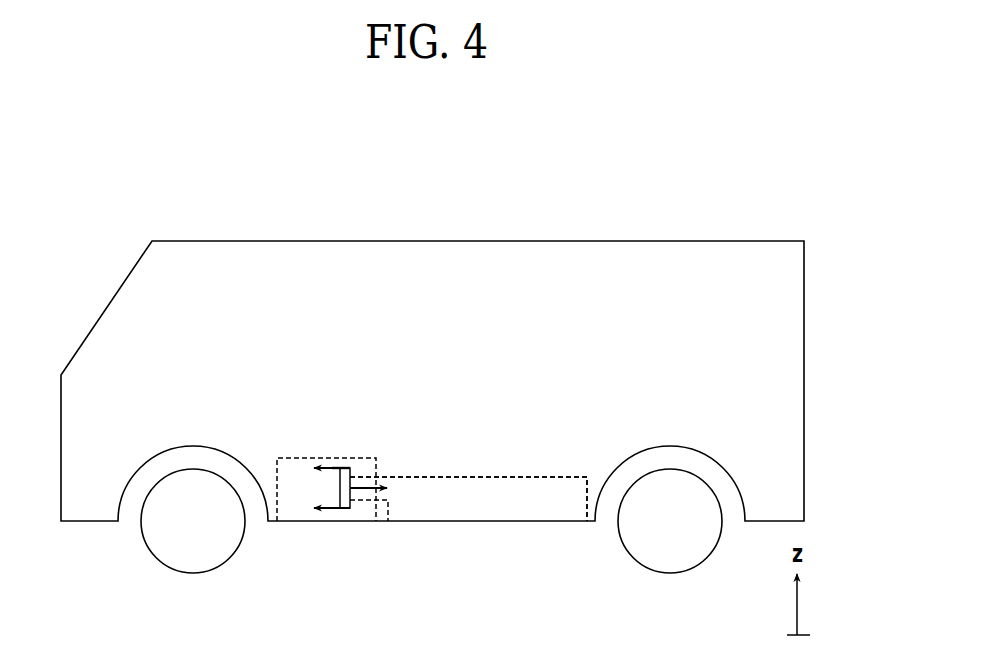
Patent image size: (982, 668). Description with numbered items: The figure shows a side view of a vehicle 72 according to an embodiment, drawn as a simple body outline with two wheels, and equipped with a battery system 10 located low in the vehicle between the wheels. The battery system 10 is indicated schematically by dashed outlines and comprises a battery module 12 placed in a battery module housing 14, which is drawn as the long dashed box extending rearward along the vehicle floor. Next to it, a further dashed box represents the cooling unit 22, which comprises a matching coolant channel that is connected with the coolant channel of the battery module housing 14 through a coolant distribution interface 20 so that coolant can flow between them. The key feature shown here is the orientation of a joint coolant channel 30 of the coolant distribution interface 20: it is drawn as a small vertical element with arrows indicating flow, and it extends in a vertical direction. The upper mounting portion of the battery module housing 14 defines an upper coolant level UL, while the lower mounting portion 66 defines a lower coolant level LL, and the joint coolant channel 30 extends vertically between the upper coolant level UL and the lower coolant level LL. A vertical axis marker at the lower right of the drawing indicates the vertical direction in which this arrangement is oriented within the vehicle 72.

The vehicle 72 is at (616, 222).
The battery system 10 is at (496, 456).
The cooling unit 22 is at (293, 513).
The battery module 12 is at (480, 512).
The battery module housing 14 is at (468, 499).
The joint coolant channel 30 is at (337, 483).
The coolant distribution interface 20 is at (352, 475).
The lower mounting portion 66 is at (352, 508).
The upper coolant level UL is at (332, 468).
The lower coolant level LL is at (331, 508).